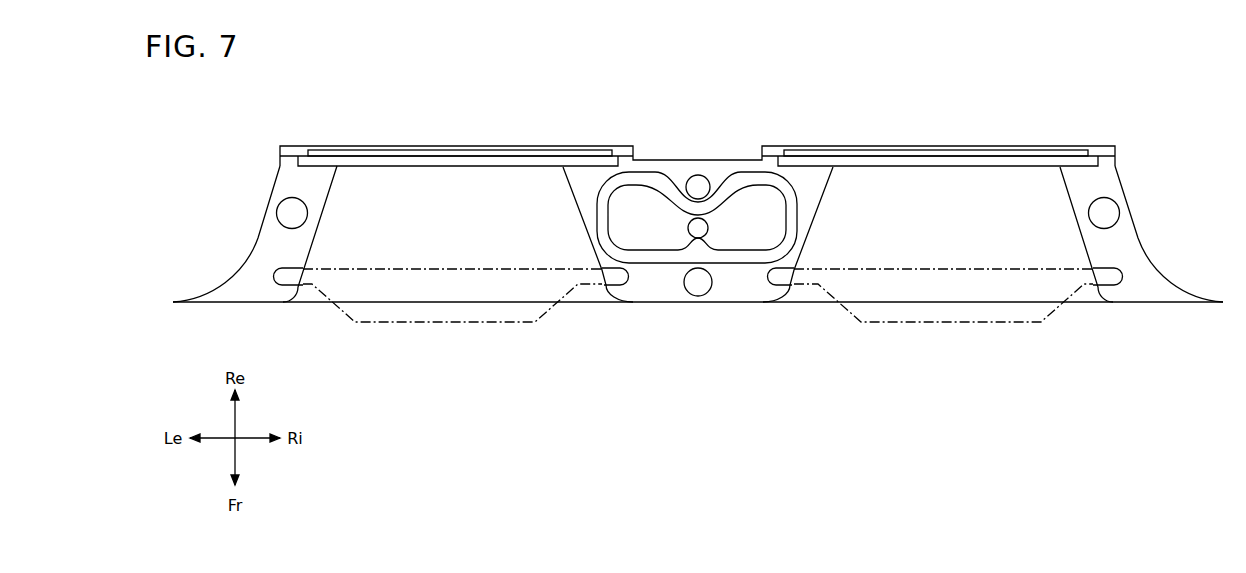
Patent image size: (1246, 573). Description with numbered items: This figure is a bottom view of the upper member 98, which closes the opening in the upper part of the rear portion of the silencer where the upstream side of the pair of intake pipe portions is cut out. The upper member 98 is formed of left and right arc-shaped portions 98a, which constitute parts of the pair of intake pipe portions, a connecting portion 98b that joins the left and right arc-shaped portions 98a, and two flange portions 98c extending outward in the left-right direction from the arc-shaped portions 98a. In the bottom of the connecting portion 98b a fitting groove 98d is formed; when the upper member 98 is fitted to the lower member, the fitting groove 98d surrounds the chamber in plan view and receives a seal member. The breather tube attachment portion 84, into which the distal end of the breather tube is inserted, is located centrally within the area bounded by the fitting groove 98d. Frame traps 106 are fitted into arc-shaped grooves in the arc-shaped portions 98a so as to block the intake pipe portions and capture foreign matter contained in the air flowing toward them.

The upper member 98 is at (1023, 144).
The arc-shaped portions 98a is at (425, 185).
The connecting portion 98b is at (682, 172).
The flange portions 98c is at (257, 240).
The fitting groove 98d is at (797, 213).
The breather tube attachment portion 84 is at (688, 227).
The frame traps 106 is at (447, 323).